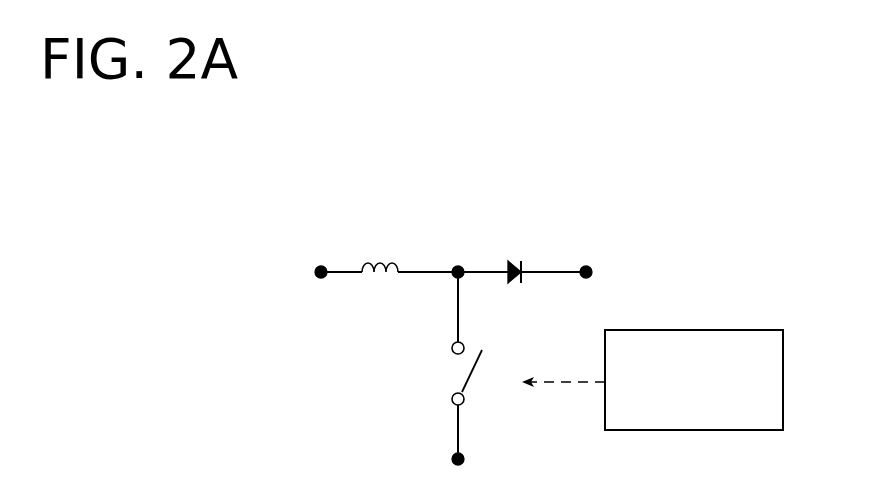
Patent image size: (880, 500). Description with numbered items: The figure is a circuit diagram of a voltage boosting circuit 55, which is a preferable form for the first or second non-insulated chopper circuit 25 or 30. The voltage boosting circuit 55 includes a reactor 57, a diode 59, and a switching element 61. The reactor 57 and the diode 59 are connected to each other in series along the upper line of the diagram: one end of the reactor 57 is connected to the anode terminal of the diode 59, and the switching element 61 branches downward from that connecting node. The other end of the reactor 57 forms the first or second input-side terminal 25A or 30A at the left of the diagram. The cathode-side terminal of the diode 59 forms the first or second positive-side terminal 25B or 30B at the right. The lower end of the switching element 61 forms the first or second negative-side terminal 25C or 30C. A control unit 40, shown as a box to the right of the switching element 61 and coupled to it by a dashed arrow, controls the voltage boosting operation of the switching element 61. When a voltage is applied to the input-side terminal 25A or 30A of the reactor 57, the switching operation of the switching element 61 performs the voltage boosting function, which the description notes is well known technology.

The voltage boosting circuit 55 is at (458, 293).
The first non-insulated chopper circuit 25 is at (458, 293).
The second non-insulated chopper circuit 30 is at (458, 293).
The reactor 57 is at (376, 243).
The diode 59 is at (522, 243).
The switching element 61 is at (441, 378).
The control unit 40 is at (652, 380).
The first input-side terminal 25A is at (267, 289).
The second input-side terminal 30A is at (316, 275).
The first positive-side terminal 25B is at (662, 256).
The second positive-side terminal 30B is at (591, 271).
The first negative-side terminal 25C is at (386, 475).
The second negative-side terminal 30C is at (454, 462).